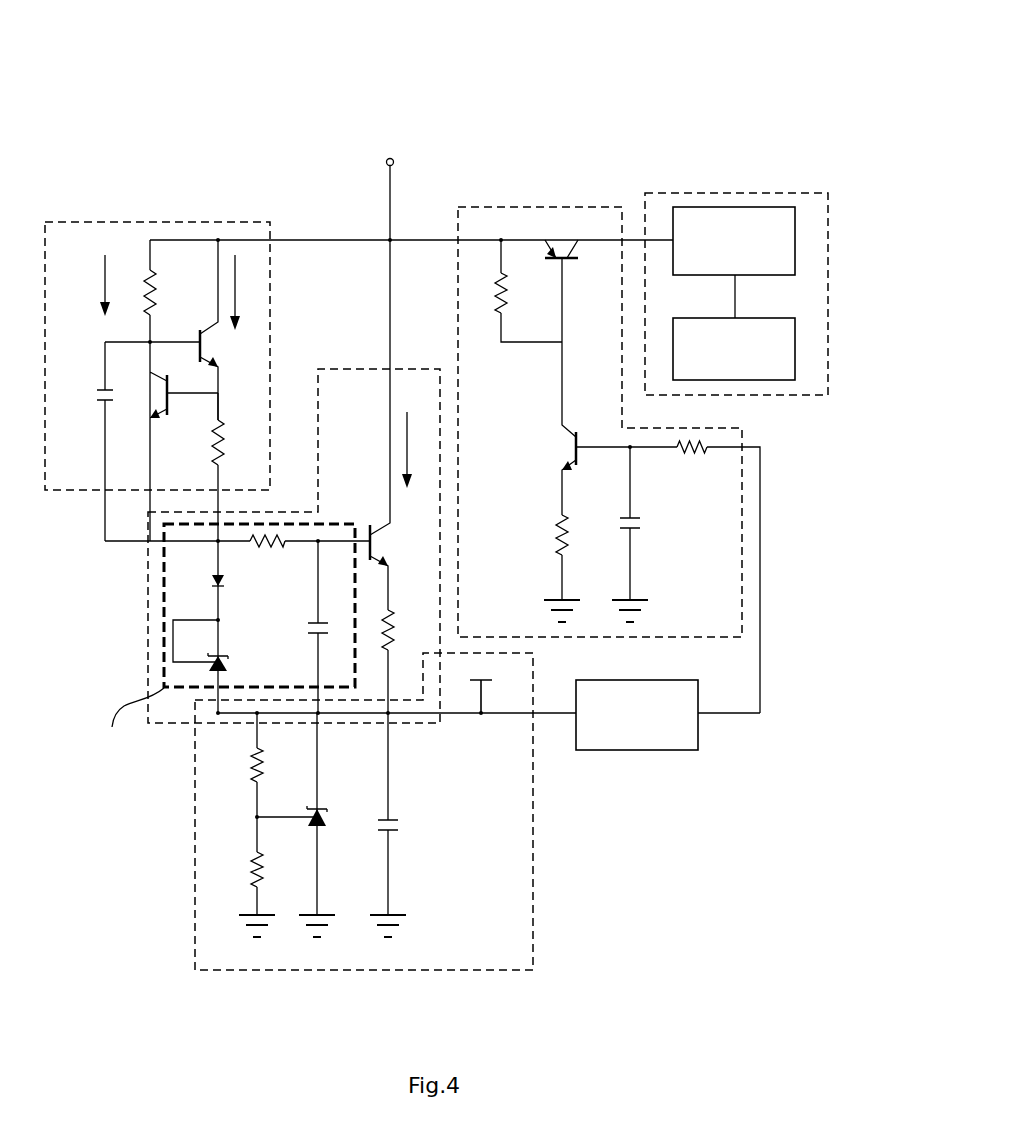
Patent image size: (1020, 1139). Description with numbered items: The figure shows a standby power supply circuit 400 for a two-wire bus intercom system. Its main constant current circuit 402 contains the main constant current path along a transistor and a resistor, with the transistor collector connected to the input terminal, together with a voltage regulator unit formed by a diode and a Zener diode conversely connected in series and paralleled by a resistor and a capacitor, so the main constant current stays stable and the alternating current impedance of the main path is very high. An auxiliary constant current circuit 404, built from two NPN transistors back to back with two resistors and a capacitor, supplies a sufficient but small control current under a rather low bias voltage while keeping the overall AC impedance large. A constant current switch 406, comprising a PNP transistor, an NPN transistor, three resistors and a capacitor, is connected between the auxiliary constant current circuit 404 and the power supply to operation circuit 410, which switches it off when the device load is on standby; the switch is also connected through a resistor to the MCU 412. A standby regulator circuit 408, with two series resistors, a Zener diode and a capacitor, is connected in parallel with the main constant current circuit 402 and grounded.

The standby power supply circuit 400 is at (670, 50).
The main constant current circuit 402 is at (221, 637).
The auxiliary constant current circuit 404 is at (157, 354).
The constant current switch 406 is at (609, 441).
The standby regulator circuit 408 is at (364, 811).
The power supply to operation circuit 410 is at (736, 275).
The MCU 412 is at (668, 736).